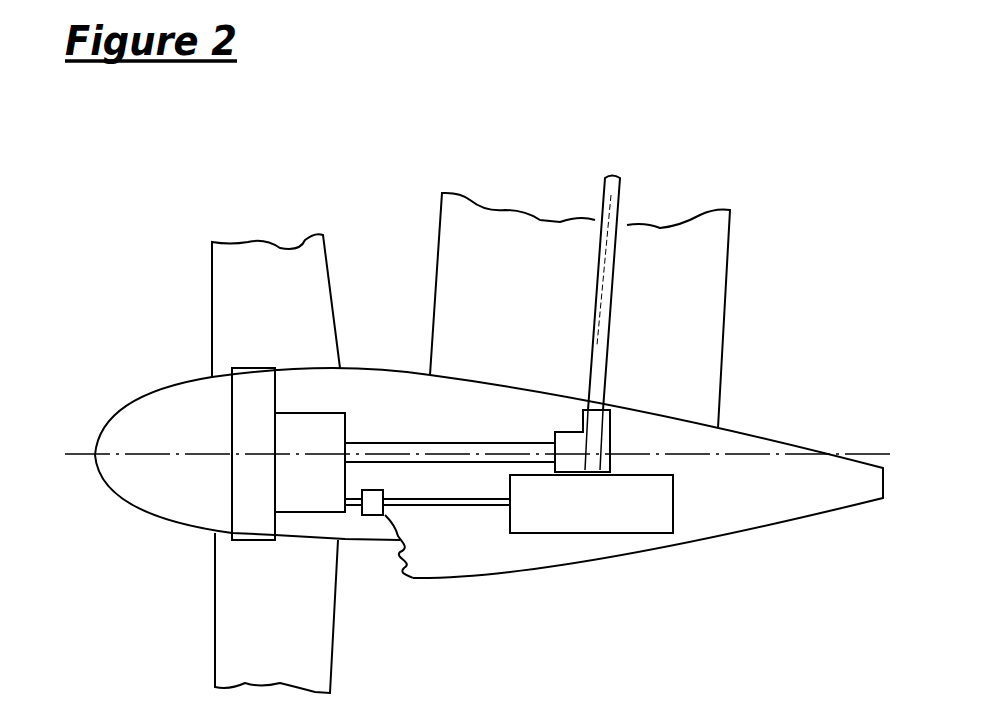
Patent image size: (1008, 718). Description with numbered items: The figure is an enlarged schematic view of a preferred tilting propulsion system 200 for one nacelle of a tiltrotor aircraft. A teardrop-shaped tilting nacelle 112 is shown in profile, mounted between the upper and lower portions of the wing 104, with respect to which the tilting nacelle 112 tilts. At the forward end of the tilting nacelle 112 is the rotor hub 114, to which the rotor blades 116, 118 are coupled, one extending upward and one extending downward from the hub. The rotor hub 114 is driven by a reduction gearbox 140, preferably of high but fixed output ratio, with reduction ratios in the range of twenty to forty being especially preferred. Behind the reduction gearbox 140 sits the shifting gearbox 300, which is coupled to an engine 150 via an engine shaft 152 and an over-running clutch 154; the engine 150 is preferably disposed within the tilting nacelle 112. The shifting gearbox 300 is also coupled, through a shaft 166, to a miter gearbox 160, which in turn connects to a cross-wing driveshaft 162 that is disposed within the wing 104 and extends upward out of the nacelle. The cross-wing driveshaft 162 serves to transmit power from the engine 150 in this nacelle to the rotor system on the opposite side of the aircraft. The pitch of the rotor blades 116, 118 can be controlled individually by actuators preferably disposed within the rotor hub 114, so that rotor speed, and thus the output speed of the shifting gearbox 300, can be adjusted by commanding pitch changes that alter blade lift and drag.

The tilting propulsion system 200 is at (200, 165).
The wing 104 is at (727, 267).
The tilting nacelle 112 is at (717, 542).
The rotor hub 114 is at (115, 497).
The rotor blade 116 is at (215, 312).
The rotor blade 118 is at (213, 618).
The reduction gearbox 140 is at (232, 412).
The engine 150 is at (617, 533).
The engine shaft 152 is at (465, 503).
The over-running clutch 154 is at (383, 515).
The miter gearbox 160 is at (610, 438).
The cross-wing driveshaft 162 is at (622, 197).
The drive shaft 166 is at (423, 443).
The shifting gearbox 300 is at (340, 513).